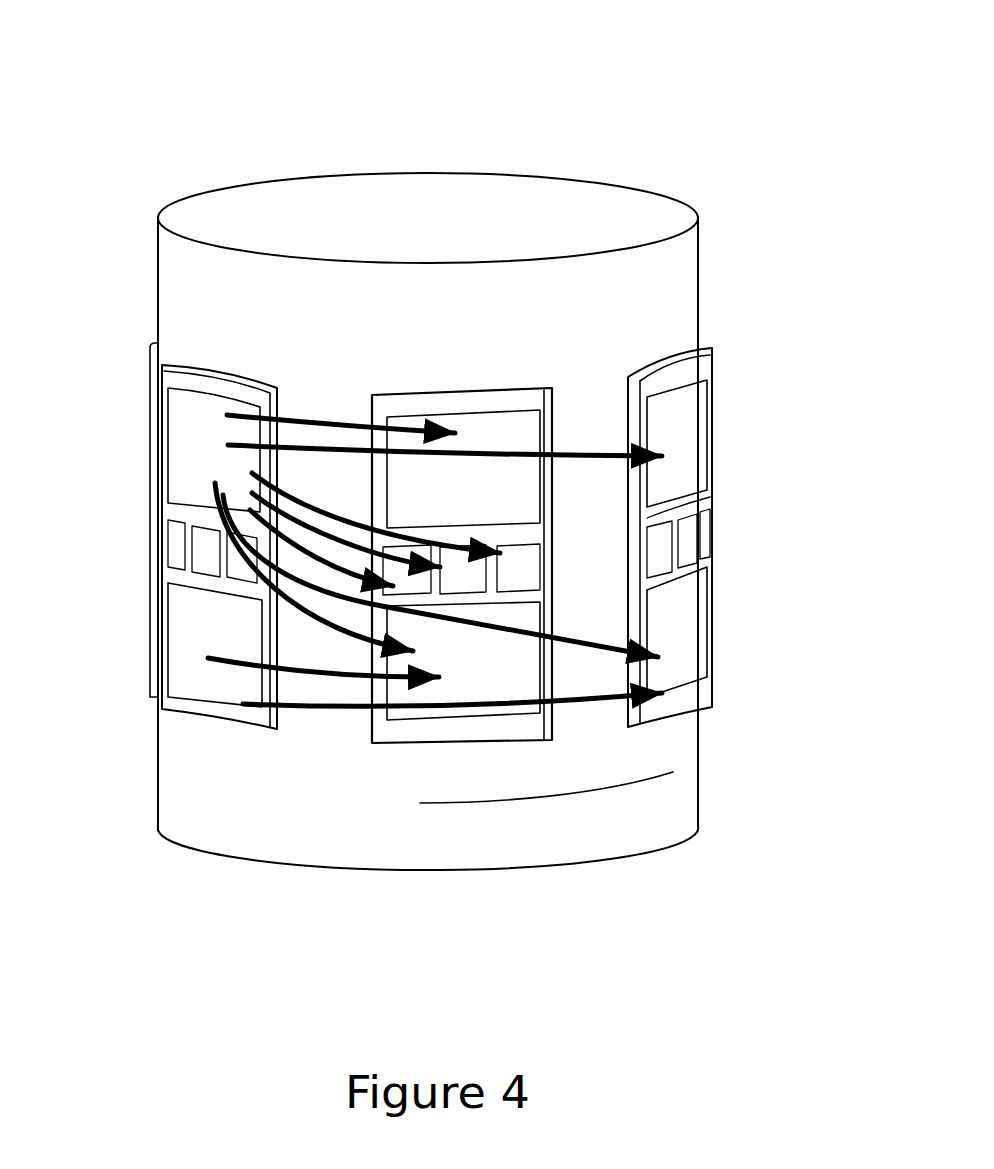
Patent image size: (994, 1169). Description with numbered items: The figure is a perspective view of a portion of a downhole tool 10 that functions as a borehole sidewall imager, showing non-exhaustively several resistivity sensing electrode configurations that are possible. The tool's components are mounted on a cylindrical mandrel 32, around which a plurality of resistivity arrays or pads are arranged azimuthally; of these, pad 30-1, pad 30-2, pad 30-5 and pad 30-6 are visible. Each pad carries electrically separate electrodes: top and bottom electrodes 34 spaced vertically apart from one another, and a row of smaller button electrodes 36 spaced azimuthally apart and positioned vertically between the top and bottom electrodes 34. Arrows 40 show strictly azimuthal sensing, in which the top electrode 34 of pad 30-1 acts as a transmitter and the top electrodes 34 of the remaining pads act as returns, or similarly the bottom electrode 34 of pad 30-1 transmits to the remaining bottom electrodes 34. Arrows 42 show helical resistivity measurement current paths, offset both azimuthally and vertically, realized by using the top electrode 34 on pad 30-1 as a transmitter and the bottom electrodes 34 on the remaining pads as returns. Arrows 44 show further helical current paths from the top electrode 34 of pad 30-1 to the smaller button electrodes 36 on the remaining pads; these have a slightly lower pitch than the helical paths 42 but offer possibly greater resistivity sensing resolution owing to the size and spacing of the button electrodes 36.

The tool 10 is at (606, 28).
The mandrel 32 is at (698, 272).
The pad 30-1 is at (222, 380).
The pad 30-2 is at (137, 360).
The pad 30-5 is at (657, 373).
The pad 30-6 is at (443, 393).
The top and bottom electrodes 34 is at (222, 470).
The button electrodes 36 is at (218, 568).
The arrows 40 is at (307, 447).
The helical current paths 42 is at (287, 617).
The arrows 44 is at (303, 552).